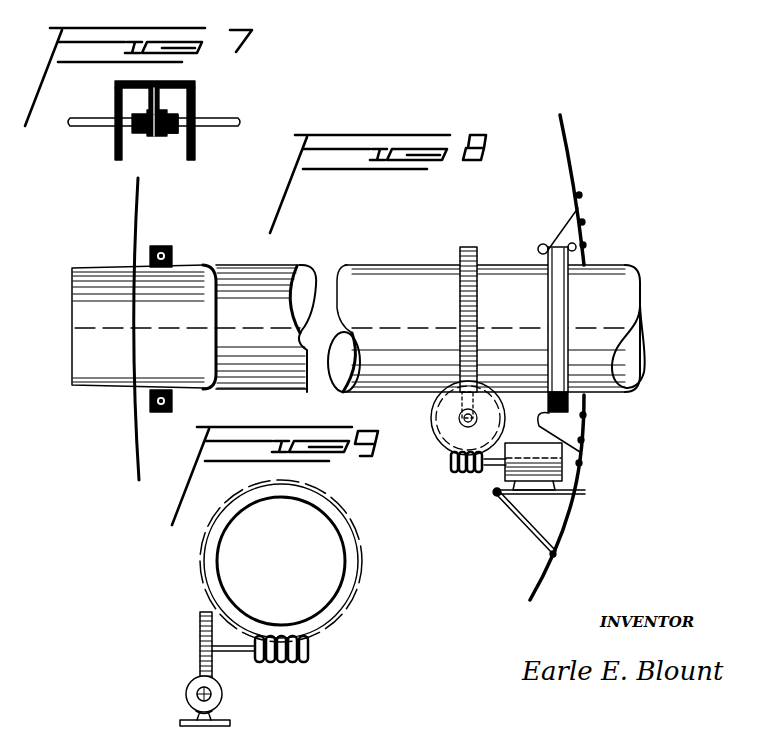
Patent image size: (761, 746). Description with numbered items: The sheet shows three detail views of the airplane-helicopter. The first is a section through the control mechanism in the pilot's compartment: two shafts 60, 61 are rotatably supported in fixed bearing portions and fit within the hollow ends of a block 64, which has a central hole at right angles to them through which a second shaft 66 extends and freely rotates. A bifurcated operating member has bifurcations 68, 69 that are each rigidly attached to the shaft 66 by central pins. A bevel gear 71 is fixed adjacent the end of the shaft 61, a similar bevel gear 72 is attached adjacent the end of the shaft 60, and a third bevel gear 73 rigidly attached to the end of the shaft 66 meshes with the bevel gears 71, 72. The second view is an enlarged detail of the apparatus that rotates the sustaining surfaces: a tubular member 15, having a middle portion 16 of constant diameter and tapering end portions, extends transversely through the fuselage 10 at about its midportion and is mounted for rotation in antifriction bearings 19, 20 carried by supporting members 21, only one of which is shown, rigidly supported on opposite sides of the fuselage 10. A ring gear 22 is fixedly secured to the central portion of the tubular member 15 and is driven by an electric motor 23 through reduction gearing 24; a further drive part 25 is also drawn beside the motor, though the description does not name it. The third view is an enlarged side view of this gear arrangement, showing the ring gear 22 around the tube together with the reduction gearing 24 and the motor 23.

In FIG. 8, the fuselage 10 is at (583, 175).
In FIG. 8, the tubular member 15 is at (637, 282).
In FIG. 8, the middle portion 16 is at (362, 278).
In FIG. 9, the middle portion 16 is at (342, 537).
In FIG. 8, the antifriction bearing 19 is at (170, 248).
In FIG. 8, the antifriction bearing 20 is at (560, 277).
In FIG. 8, the supporting member 21 is at (568, 226).
In FIG. 8, the ring gear 22 is at (478, 253).
In FIG. 9, the ring gear 22 is at (363, 562).
In FIG. 9, the electric motor 23 is at (222, 694).
In FIG. 8, the reduction gearing 24 is at (438, 440).
In FIG. 9, the reduction gearing 24 is at (257, 662).
In FIG. 8, the motor 25 is at (510, 465).
In FIG. 7, the shaft 60 is at (83, 127).
In FIG. 7, the shaft 61 is at (240, 122).
In FIG. 7, the block 64 is at (168, 132).
In FIG. 7, the second shaft 66 is at (158, 100).
In FIG. 7, the bifurcation 68 is at (150, 134).
In FIG. 7, the bifurcation 69 is at (162, 112).
In FIG. 7, the bevel gear 71 is at (195, 140).
In FIG. 7, the bevel gear 72 is at (118, 155).
In FIG. 7, the third bevel gear 73 is at (172, 82).